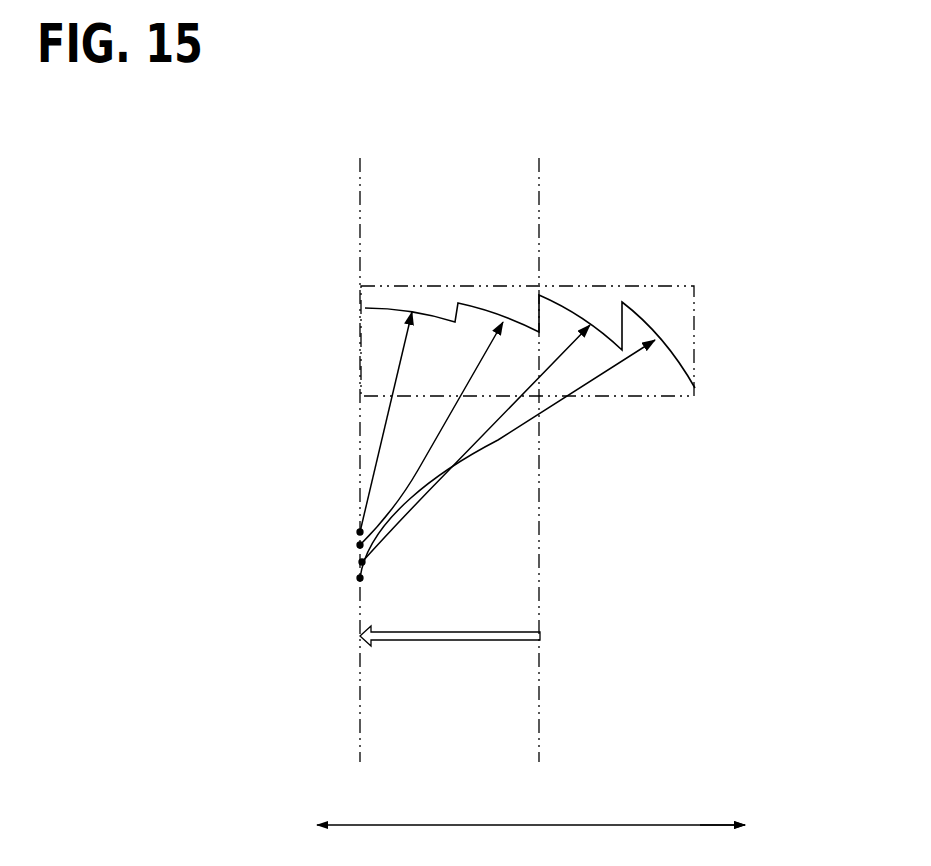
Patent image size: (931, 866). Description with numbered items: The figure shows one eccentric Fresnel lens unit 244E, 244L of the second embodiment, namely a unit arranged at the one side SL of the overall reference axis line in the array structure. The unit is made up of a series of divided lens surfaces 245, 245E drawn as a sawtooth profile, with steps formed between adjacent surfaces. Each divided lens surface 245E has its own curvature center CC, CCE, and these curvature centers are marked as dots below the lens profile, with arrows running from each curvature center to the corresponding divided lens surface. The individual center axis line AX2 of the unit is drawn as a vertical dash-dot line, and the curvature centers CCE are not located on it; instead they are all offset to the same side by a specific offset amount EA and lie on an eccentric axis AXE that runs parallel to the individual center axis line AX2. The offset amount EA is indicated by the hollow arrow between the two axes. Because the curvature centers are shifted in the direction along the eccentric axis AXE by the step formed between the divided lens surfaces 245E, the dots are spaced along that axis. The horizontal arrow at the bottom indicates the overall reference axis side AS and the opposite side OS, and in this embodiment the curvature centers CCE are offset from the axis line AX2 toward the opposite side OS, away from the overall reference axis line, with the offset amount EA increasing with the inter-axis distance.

The eccentric axis AXE is at (361, 200).
The individual center axis line AX2 is at (539, 200).
The divided lens surface 245 is at (558, 281).
The divided lens surface 245E is at (492, 313).
The one side SL is at (421, 341).
The eccentric Fresnel lens unit 244E is at (421, 341).
The eccentric Fresnel lens unit 244L is at (358, 340).
The curvature center CC is at (435, 471).
The curvature center CCE is at (358, 531).
The offset amount EA is at (458, 643).
The opposite side OS is at (513, 825).
The overall reference axis side AS is at (741, 825).